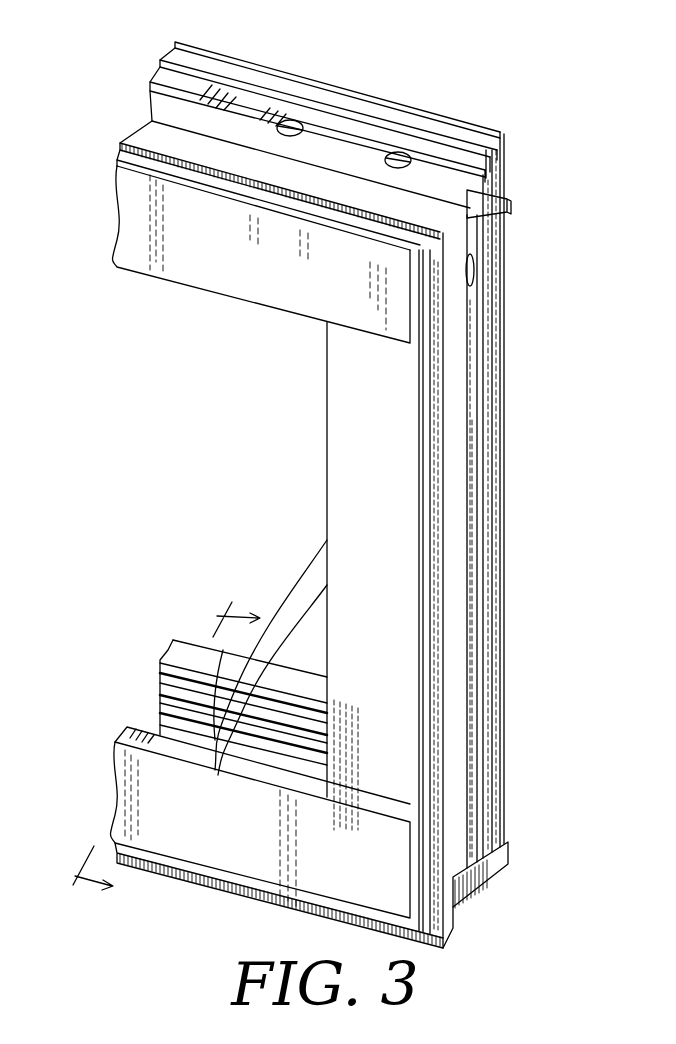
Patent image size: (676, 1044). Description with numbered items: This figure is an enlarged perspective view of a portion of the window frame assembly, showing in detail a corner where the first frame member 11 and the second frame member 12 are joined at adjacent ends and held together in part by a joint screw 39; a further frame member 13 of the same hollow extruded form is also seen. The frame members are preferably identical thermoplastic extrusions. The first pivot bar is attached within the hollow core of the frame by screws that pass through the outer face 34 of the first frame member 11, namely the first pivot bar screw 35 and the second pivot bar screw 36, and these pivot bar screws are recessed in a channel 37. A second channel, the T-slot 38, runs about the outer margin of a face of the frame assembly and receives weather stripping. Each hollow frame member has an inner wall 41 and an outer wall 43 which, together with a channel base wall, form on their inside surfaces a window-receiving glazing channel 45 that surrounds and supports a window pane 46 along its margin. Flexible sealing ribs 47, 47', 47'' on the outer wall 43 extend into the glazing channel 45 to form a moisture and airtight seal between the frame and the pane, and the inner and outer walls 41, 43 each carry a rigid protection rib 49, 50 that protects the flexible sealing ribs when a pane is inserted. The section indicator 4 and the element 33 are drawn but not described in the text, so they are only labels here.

The first frame member 11 is at (222, 68).
The second frame member 12 is at (506, 490).
The frame member 13 is at (318, 905).
The stop bar 33 is at (508, 203).
The outer face 34 is at (142, 66).
The first pivot bar screw 35 is at (300, 118).
The second pivot bar screw 36 is at (404, 152).
The channel 37 is at (492, 151).
The T-slot 38 is at (158, 126).
The joint screw 39 is at (476, 274).
The inner wall 41 is at (115, 785).
The outer wall 43 is at (160, 656).
The glazing channel 45 is at (105, 718).
The window pane 46 is at (312, 592).
The flexible sealing rib 47 is at (218, 688).
The flexible sealing rib 47' is at (217, 709).
The flexible sealing rib 47'' is at (217, 730).
The rigid protection rib 49 is at (258, 776).
The rigid protection rib 50 is at (224, 662).
The section line 4- 4 is at (166, 744).